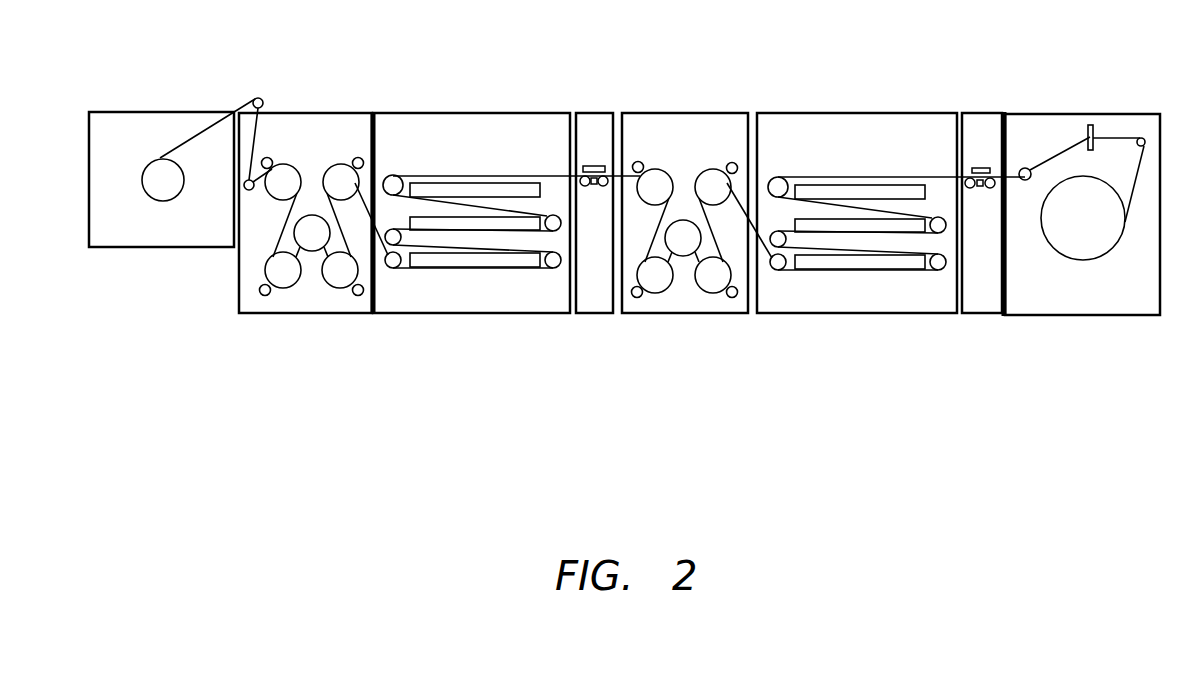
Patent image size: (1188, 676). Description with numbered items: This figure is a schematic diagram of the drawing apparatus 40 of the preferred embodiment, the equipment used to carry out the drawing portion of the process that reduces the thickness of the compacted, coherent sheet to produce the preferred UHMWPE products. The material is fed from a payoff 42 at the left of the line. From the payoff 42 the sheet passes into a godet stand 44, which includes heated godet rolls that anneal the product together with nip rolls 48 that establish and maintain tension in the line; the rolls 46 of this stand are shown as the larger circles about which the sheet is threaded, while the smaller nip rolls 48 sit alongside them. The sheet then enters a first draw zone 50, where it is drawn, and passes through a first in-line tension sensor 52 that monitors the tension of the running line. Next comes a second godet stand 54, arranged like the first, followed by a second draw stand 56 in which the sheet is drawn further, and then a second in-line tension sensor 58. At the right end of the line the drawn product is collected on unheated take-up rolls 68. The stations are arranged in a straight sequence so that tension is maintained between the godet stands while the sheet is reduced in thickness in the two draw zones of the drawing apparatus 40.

The drawing apparatus 40 is at (568, 440).
The payoff 42 is at (133, 111).
The godet stand 44 is at (356, 125).
The rollers 46 is at (341, 164).
The nip rolls 48 is at (357, 158).
The first draw zone 50 is at (487, 122).
The first in-line tension sensor 52 is at (595, 127).
The second godet stand 54 is at (738, 125).
The second draw stand 56 is at (850, 125).
The second in-line tension sensor 58 is at (985, 125).
The unheated take-up rolls 68 is at (1060, 128).